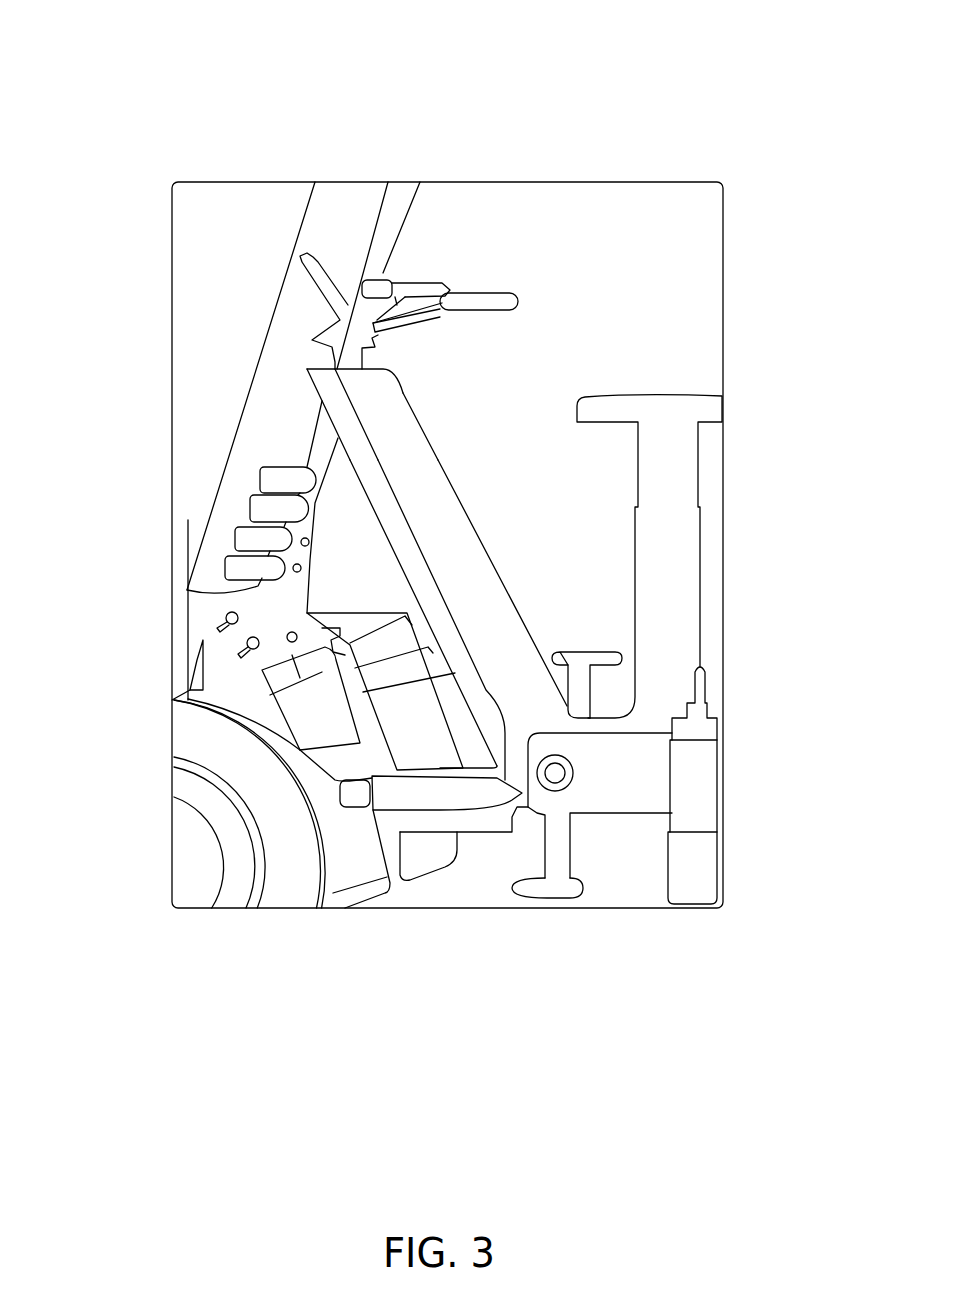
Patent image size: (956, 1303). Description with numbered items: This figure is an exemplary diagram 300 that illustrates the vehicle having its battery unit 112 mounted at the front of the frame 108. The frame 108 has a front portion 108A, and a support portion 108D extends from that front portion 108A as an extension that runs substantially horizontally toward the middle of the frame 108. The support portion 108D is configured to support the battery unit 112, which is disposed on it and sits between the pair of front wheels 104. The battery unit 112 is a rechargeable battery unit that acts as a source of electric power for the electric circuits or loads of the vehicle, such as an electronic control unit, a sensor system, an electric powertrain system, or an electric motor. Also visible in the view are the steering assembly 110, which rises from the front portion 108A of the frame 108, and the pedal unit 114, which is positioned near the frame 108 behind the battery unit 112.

The exemplary diagram 300 is at (248, 78).
The pair of front wheels 104 is at (232, 865).
The frame 108 is at (436, 507).
The front portion 108A is at (322, 402).
The support portion 108D is at (427, 817).
The steering assembly 110 is at (480, 287).
The battery unit 112 is at (360, 718).
The pedal unit 114 is at (527, 891).